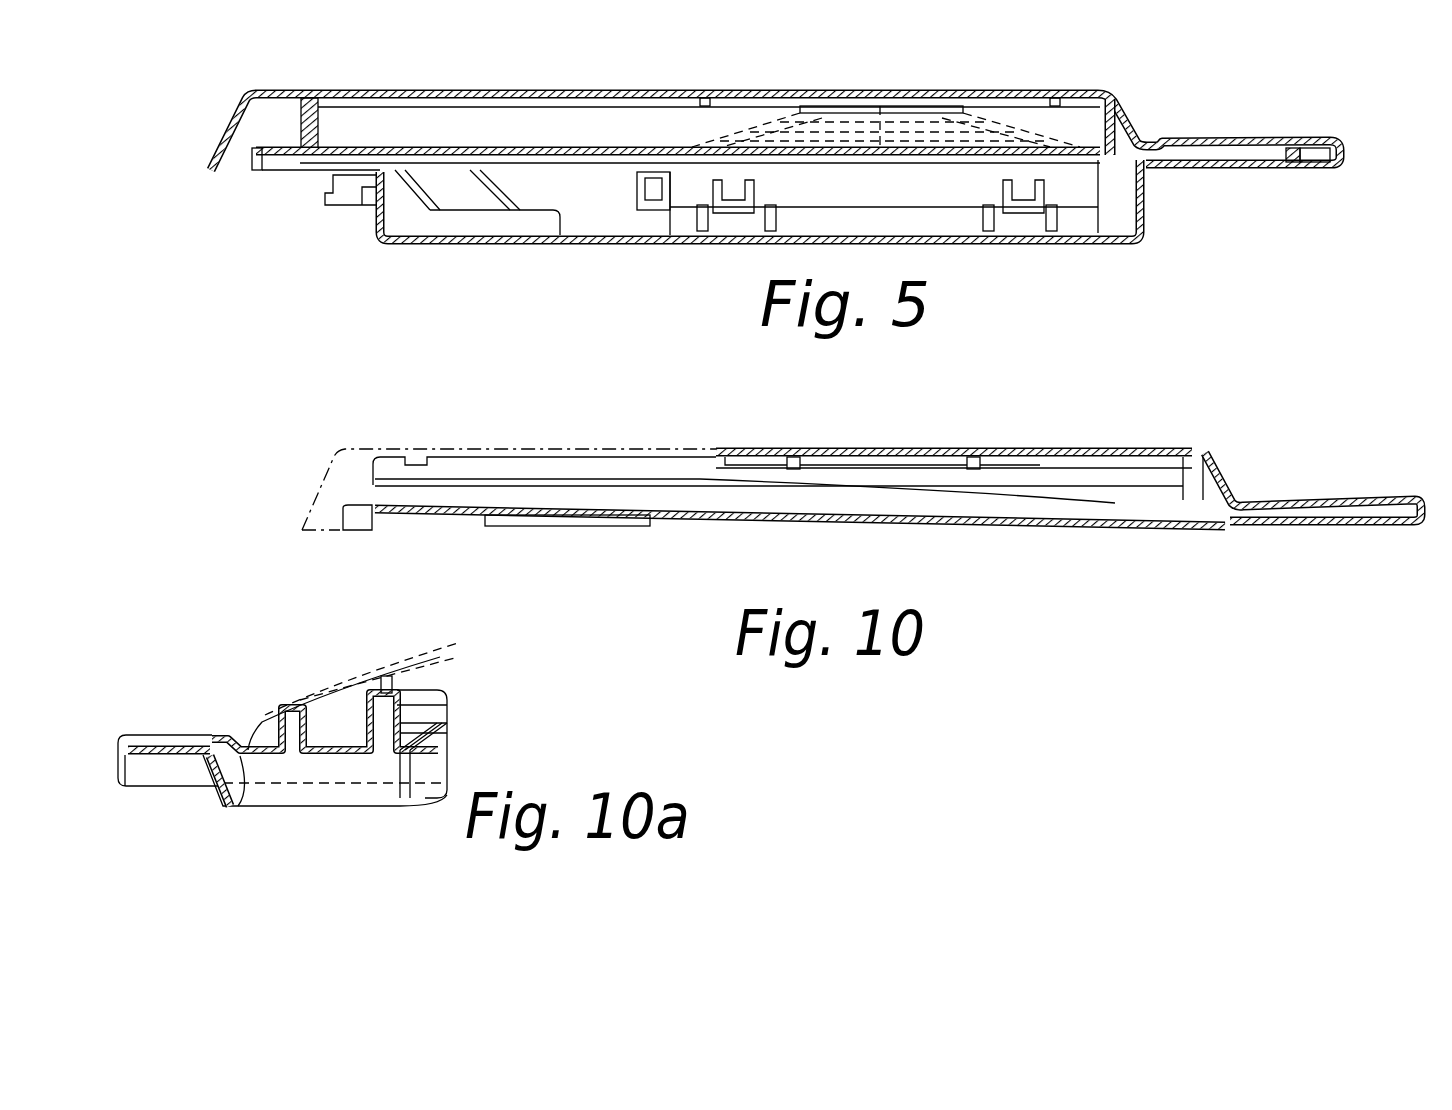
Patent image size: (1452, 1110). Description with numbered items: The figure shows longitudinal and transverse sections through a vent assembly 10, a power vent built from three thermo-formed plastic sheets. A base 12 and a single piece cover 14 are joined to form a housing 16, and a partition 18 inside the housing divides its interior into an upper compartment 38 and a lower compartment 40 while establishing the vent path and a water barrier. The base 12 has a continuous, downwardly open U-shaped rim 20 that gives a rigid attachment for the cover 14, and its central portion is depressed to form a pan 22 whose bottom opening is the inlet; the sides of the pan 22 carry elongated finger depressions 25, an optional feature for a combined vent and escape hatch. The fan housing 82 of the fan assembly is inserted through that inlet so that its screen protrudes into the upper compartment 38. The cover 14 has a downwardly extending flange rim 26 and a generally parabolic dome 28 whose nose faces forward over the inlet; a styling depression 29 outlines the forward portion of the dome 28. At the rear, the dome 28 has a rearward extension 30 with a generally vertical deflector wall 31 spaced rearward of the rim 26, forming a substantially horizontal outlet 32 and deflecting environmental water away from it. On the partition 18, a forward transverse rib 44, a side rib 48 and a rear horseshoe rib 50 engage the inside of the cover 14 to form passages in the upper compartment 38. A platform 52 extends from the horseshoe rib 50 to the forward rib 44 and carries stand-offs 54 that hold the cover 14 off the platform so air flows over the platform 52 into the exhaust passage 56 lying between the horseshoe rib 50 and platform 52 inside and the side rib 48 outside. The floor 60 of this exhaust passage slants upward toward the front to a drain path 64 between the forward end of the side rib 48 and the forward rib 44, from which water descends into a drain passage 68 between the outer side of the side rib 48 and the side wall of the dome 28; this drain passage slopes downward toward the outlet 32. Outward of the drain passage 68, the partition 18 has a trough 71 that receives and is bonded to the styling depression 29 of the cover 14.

In FIG. 5, the vent assembly 10 is at (1178, 107).
In FIG. 10, the vent assembly 10 is at (1228, 432).
In FIG. 5, the base 12 is at (420, 241).
In FIG. 10a, the base 12 is at (228, 795).
In FIG. 5, the cover 14 is at (370, 92).
In FIG. 10, the cover 14 is at (1340, 496).
In FIG. 10a, the cover 14 is at (136, 736).
In FIG. 5, the housing 16 is at (1248, 170).
In FIG. 5, the partition 18 is at (446, 147).
In FIG. 10, the partition 18 is at (456, 516).
In FIG. 10a, the partition 18 is at (173, 746).
In FIG. 5, the rim 20 is at (290, 130).
In FIG. 5, the pan 22 is at (372, 186).
In FIG. 10a, the pan 22 is at (212, 768).
In FIG. 5, the finger depressions 25 is at (640, 190).
In FIG. 5, the rim 26 is at (1345, 158).
In FIG. 5, the dome 28 is at (1086, 92).
In FIG. 10, the dome 28 is at (1222, 466).
In FIG. 10a, the dome 28 is at (452, 650).
In FIG. 10a, the styling depression 29 is at (237, 743).
In FIG. 5, the rearward extension 30 is at (224, 132).
In FIG. 10, the rearward extension 30 is at (318, 484).
In FIG. 5, the deflector wall 31 is at (222, 150).
In FIG. 5, the outlet 32 is at (229, 164).
In FIG. 5, the upper compartment 38 is at (990, 100).
In FIG. 5, the lower compartment 40 is at (623, 217).
In FIG. 5, the forward transverse rib 44 is at (1122, 98).
In FIG. 10, the forward transverse rib 44 is at (1191, 458).
In FIG. 10a, the side rib 48 is at (300, 720).
In FIG. 5, the horseshoe rib 50 is at (513, 118).
In FIG. 10, the horseshoe rib 50 is at (490, 463).
In FIG. 5, the platform 52 is at (720, 118).
In FIG. 10, the platform 52 is at (1070, 470).
In FIG. 10a, the platform 52 is at (448, 713).
In FIG. 5, the stand-offs 54 is at (702, 98).
In FIG. 10, the stand-offs 54 is at (800, 462).
In FIG. 10a, the stand-offs 54 is at (395, 682).
In FIG. 10, the exhaust passage 56 is at (600, 492).
In FIG. 10a, the exhaust passage 56 is at (345, 727).
In FIG. 10a, the floor 60 is at (310, 752).
In FIG. 10, the drain path 64 is at (1166, 524).
In FIG. 10, the drain passage 68 is at (840, 503).
In FIG. 10a, the drain passage 68 is at (258, 722).
In FIG. 10a, the trough 71 is at (233, 790).
In FIG. 5, the fan housing 82 is at (1098, 180).
In FIG. 10a, the fan housing 82 is at (440, 757).